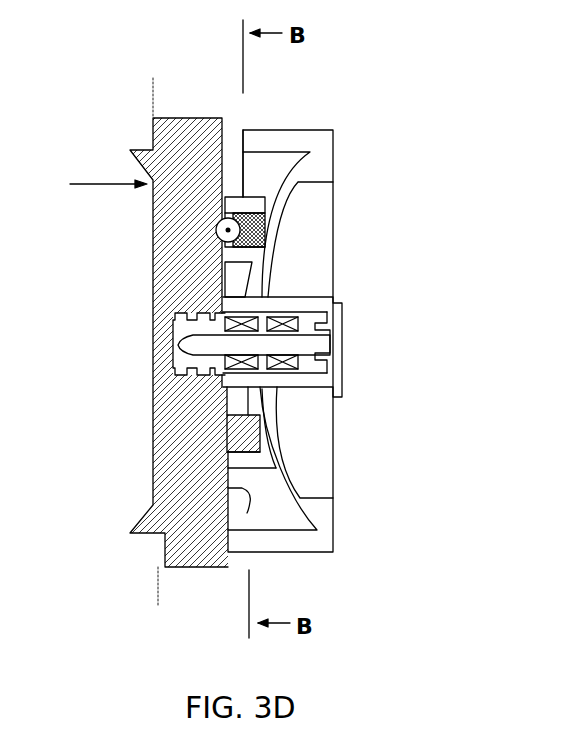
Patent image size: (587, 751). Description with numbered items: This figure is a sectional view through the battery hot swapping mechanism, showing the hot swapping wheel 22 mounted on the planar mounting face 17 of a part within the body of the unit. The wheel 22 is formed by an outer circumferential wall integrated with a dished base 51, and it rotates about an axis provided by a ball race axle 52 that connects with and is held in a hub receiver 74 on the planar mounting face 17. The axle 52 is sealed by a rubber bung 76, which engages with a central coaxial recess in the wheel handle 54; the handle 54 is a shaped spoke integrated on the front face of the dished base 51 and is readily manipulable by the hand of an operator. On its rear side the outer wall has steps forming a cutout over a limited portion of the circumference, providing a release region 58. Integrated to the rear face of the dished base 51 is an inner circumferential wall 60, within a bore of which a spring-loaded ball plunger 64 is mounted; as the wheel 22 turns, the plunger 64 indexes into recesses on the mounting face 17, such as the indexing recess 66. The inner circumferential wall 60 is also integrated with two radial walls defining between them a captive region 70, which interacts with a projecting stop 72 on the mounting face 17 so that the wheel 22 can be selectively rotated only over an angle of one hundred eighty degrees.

The planar mounting face 17 is at (243, 515).
The hot swapping wheel 22 is at (337, 182).
The release region 58 is at (233, 163).
The spring-loaded ball plunger 64 is at (268, 229).
The indexing recess 66 is at (205, 232).
The wheel handle 54 is at (300, 303).
The hub receiver 74 is at (175, 343).
The ball race axle 52 is at (303, 343).
The bung 76 is at (337, 361).
The stop 72 is at (240, 433).
The dished base 51 is at (272, 443).
The inner circumferential wall 60 is at (240, 460).
The captive region 70 is at (248, 513).